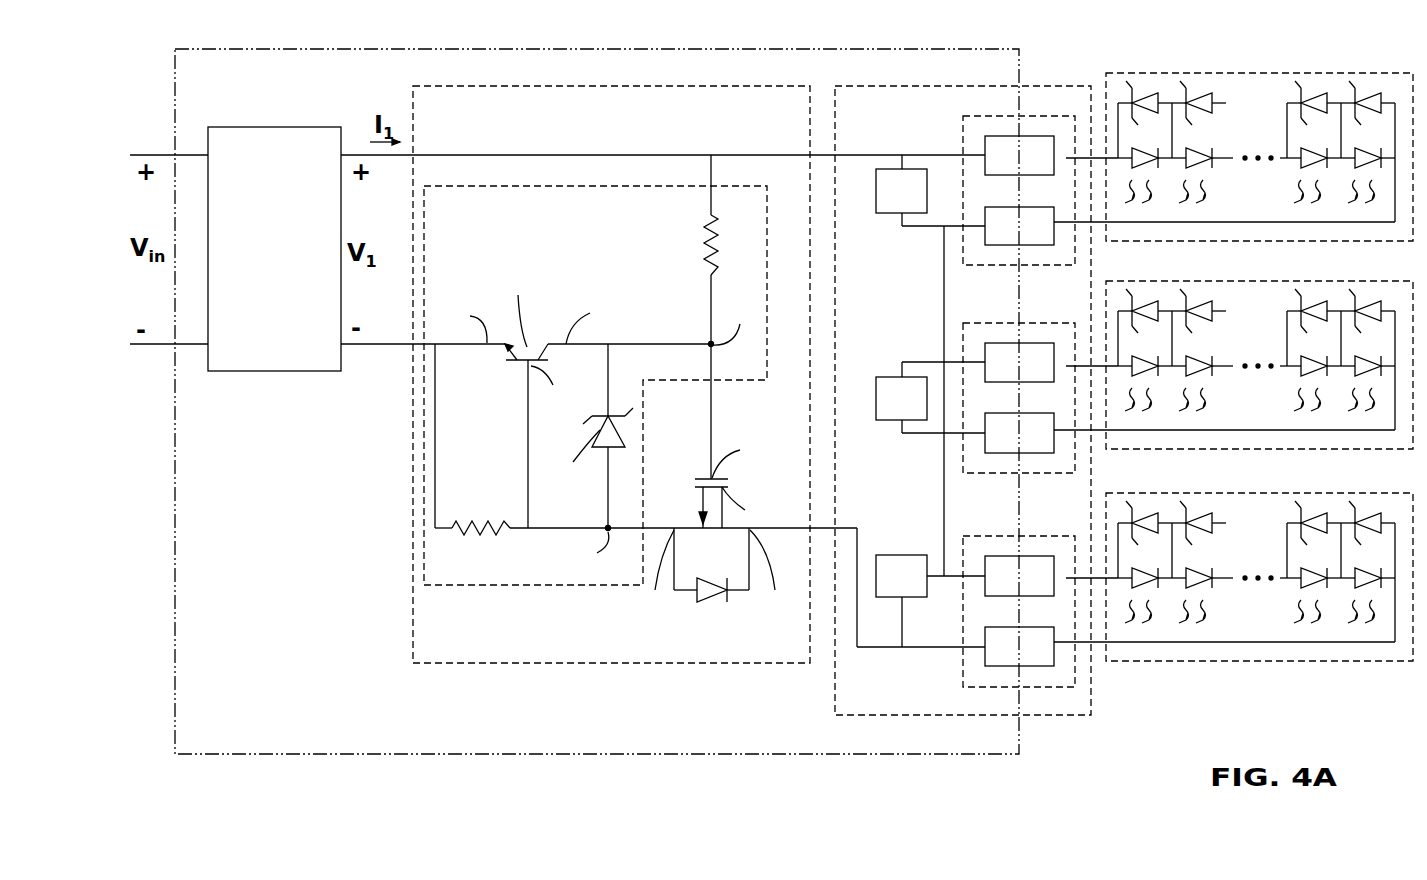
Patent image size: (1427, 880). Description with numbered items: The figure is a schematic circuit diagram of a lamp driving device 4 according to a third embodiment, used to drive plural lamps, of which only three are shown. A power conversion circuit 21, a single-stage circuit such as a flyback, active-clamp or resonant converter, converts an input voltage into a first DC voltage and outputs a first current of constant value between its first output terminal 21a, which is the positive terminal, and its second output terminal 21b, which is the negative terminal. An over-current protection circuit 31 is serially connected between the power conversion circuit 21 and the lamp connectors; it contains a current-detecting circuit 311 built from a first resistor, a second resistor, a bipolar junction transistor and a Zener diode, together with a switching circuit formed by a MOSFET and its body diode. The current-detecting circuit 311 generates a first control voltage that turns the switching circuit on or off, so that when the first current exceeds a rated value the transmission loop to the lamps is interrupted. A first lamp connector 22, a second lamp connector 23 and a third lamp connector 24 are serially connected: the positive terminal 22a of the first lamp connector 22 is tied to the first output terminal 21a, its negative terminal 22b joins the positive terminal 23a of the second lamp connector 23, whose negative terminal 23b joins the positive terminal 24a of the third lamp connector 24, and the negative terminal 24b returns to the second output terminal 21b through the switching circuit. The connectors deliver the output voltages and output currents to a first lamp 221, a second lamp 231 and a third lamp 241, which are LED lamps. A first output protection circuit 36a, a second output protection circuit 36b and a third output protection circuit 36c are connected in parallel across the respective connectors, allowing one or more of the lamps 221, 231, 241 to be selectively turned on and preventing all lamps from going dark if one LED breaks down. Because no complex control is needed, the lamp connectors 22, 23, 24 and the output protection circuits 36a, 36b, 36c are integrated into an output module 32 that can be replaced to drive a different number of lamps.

The lamp driving device 4 is at (300, 48).
The power conversion circuit 21 is at (307, 127).
The first output terminal 21a is at (341, 155).
The second output terminal 21b is at (341, 344).
The first lamp connector 22 is at (963, 133).
The positive terminal 22a is at (1019, 155).
The negative terminal 22b is at (1019, 226).
The second lamp connector 23 is at (1048, 474).
The positive terminal 23a is at (1019, 362).
The negative terminal 23b is at (1019, 433).
The third lamp connector 24 is at (963, 660).
The positive terminal 24a is at (1019, 576).
The negative terminal 24b is at (1019, 646).
The over-current protection circuit 31 is at (413, 630).
The current-detecting circuit 311 is at (731, 382).
The output module 32 is at (835, 690).
The first output protection circuit 36a is at (930, 190).
The second output protection circuit 36b is at (930, 397).
The third output protection circuit 36c is at (930, 601).
The first lamp 221 is at (1344, 75).
The second lamp 231 is at (1344, 283).
The third lamp 241 is at (1344, 495).